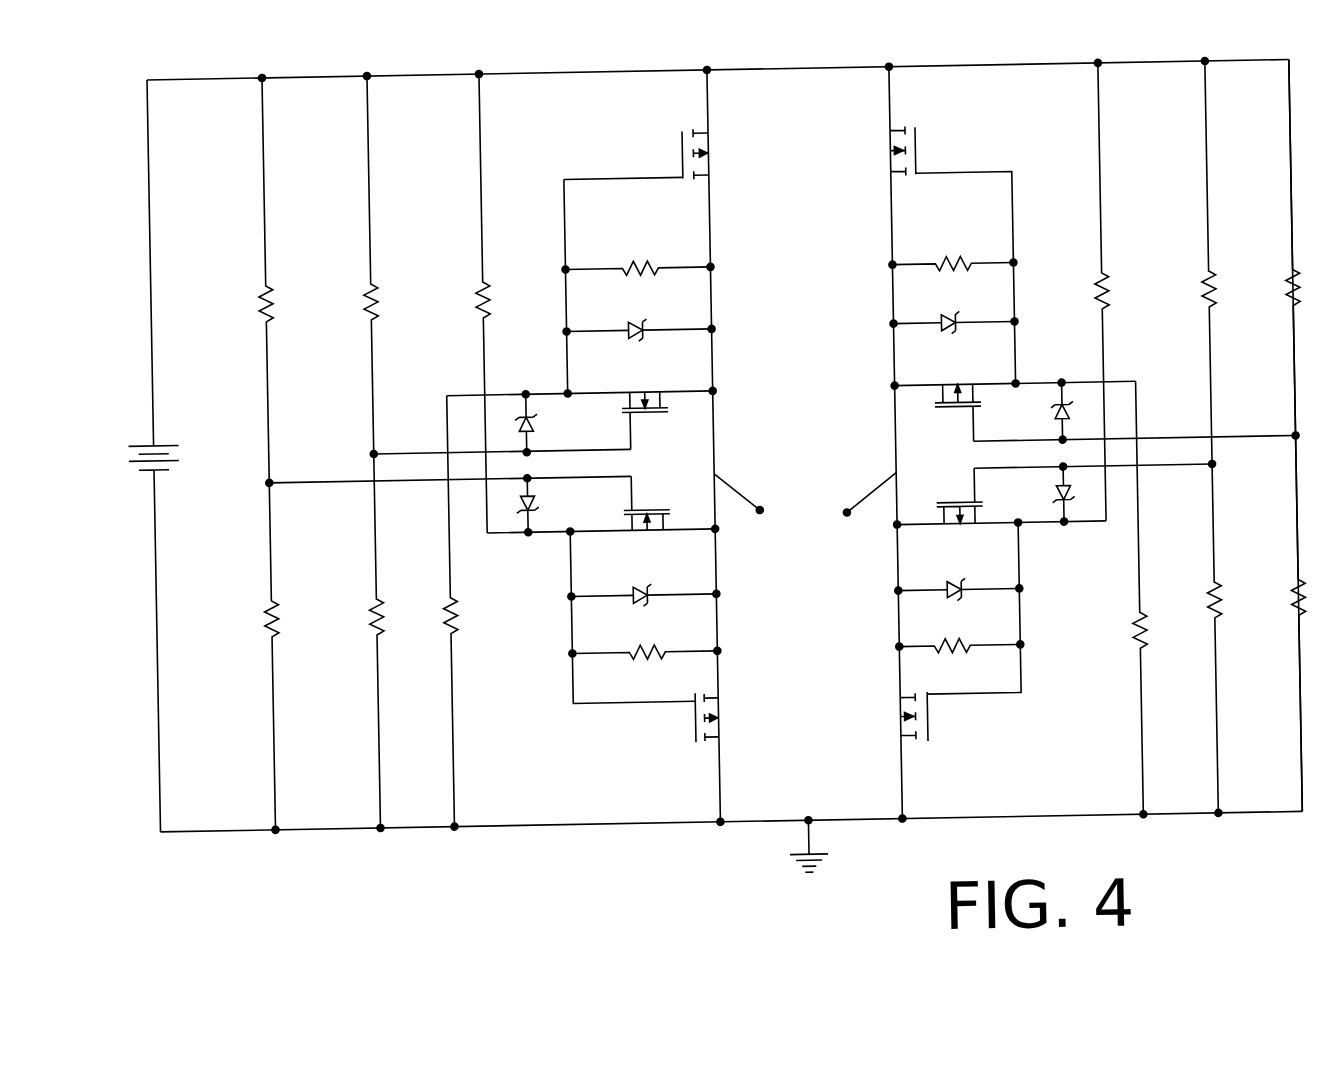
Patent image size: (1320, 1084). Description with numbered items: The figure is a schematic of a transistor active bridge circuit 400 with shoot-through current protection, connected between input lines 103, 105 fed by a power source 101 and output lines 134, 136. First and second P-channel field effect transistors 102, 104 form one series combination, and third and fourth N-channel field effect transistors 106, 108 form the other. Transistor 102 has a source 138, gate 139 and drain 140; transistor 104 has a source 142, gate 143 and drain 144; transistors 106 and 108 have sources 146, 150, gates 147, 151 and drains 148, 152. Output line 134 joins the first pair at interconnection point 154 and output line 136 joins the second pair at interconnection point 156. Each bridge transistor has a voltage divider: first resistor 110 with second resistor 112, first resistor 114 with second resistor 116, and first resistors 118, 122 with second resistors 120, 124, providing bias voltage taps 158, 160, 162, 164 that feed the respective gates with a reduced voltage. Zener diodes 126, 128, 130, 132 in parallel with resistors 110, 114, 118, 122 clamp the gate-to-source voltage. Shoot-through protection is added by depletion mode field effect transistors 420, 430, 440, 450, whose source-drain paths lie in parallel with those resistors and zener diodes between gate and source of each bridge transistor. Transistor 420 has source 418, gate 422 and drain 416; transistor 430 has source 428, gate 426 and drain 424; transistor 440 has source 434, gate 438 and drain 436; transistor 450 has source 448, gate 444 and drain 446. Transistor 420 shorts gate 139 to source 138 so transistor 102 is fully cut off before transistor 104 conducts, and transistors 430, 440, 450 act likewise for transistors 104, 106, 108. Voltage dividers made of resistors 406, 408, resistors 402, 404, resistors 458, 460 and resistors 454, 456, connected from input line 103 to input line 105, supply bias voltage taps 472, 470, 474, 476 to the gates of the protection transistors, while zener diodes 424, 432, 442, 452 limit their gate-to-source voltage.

The power source 101 is at (144, 432).
The first field effect transistor 102 is at (681, 167).
The input line 103 is at (174, 85).
The second field effect transistor 104 is at (664, 723).
The input line 105 is at (160, 833).
The third field effect transistor 106 is at (933, 172).
The fourth field effect transistor 108 is at (889, 709).
The first resistor 110 is at (637, 276).
The second resistor 112 is at (441, 617).
The first resistor 114 is at (616, 659).
The second resistor 116 is at (479, 302).
The first resistor 118 is at (960, 276).
The second resistor 120 is at (1137, 652).
The first resistor 122 is at (945, 658).
The second resistor 124 is at (1099, 297).
The zener diode 126 is at (633, 330).
The zener diode 128 is at (631, 596).
The zener diode 130 is at (946, 330).
The zener diode 132 is at (1020, 585).
The output line 134 is at (734, 501).
The output line 136 is at (856, 506).
The source 138 is at (709, 216).
The gate 139 is at (667, 190).
The drain 140 is at (709, 143).
The source 142 is at (709, 699).
The gate 143 is at (677, 712).
The drain 144 is at (708, 750).
The source 146 is at (886, 228).
The gate 147 is at (933, 186).
The drain 148 is at (889, 145).
The source 150 is at (889, 691).
The gate 151 is at (927, 708).
The drain 152 is at (889, 764).
The interconnection point 154 is at (491, 470).
The interconnection point 156 is at (1054, 454).
The bias voltage tap 158 is at (604, 286).
The bias voltage tap 160 is at (600, 617).
The bias voltage tap 162 is at (984, 277).
The bias voltage tap 164 is at (1000, 608).
The transistor active bridge circuit 400 is at (246, 376).
The resistor 402 is at (262, 302).
The resistor 404 is at (262, 617).
The resistor 406 is at (367, 303).
The resistor 408 is at (367, 617).
The drain 416 is at (688, 400).
The source 418 is at (576, 400).
The field effect transistor 420 is at (676, 425).
The gate 422 is at (621, 434).
The drain 424 is at (524, 434).
The gate 426 is at (626, 506).
The source 428 is at (574, 538).
The field effect transistor 430 is at (654, 549).
The zener diode 432 is at (530, 508).
The source 434 is at (998, 398).
The drain 436 is at (898, 399).
The gate 438 is at (971, 432).
The field effect transistor 440 is at (908, 424).
The zener diode 442 is at (1050, 441).
The gate 444 is at (970, 507).
The drain 446 is at (899, 537).
The source 448 is at (985, 539).
The field effect transistor 450 is at (934, 550).
The zener diode 452 is at (1051, 510).
The resistor 454 is at (1204, 310).
The resistor 456 is at (1204, 621).
The resistor 458 is at (1289, 312).
The resistor 460 is at (1289, 621).
The bias voltage tap 470 is at (258, 482).
The bias voltage tap 472 is at (362, 455).
The bias voltage tap 474 is at (1285, 454).
The bias voltage tap 476 is at (1212, 485).